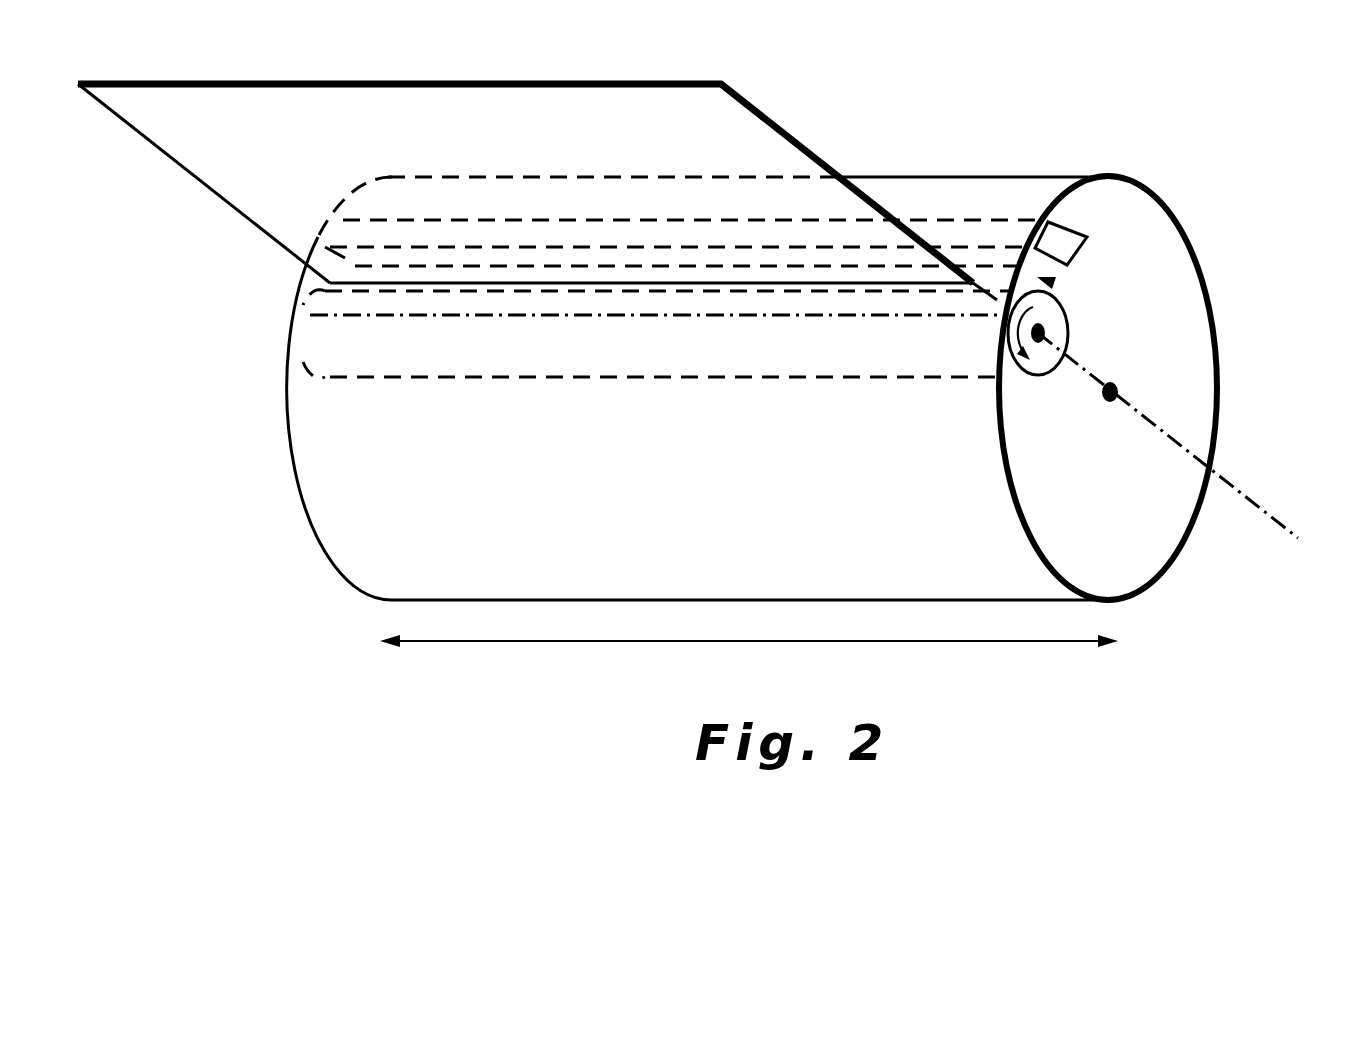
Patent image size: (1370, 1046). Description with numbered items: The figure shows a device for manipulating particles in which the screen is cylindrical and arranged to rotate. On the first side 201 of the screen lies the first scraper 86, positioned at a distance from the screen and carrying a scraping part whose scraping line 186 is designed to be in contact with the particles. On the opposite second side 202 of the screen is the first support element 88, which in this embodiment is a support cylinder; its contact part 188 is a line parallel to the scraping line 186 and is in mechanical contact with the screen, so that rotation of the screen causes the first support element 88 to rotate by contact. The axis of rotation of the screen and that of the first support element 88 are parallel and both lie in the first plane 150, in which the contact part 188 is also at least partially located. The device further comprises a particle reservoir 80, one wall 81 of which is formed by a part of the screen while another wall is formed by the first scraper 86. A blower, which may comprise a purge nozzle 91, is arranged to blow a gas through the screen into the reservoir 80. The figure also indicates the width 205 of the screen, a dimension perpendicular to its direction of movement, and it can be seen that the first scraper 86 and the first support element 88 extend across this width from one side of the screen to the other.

The particle reservoir 80 is at (552, 162).
The first scraper 86 is at (790, 133).
The purge nozzle 91 is at (1067, 242).
The wall 81 is at (1050, 282).
The first support element 88 is at (1067, 325).
The scraping line 186 is at (627, 282).
The contact part 188 is at (703, 315).
The first plane 150 is at (1253, 502).
The first side 201 is at (1248, 571).
The second side 202 is at (1137, 571).
The width 205 is at (713, 642).